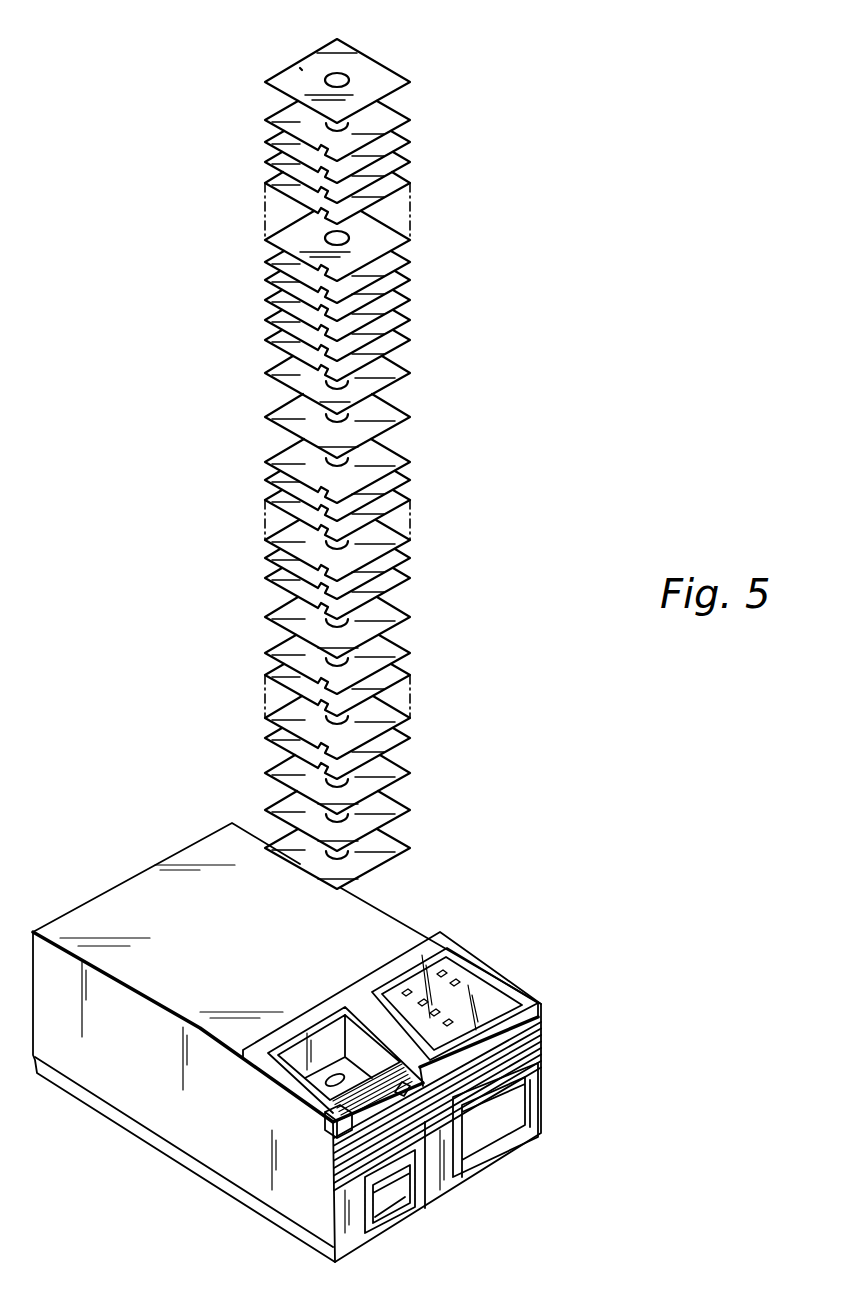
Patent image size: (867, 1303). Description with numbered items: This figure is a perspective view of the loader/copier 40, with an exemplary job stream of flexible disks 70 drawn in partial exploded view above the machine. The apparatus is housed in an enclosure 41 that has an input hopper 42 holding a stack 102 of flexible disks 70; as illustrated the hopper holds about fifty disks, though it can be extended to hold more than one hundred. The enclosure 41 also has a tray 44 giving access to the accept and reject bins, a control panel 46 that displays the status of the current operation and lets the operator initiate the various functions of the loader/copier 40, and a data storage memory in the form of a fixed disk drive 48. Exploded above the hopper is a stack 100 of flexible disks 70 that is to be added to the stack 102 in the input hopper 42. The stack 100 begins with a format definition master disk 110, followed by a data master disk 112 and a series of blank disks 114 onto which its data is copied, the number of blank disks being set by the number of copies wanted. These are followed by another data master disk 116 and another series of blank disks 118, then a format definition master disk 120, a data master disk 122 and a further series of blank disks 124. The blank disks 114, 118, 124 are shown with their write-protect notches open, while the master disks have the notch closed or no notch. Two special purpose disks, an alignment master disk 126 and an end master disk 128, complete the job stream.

The stack of flexible disks 100 is at (548, 405).
The flexible disk 70 is at (378, 66).
The end master disk 128 is at (300, 70).
The blank disks 124 is at (416, 108).
The data master disk 122 is at (400, 373).
The format definition master disk 120 is at (400, 417).
The blank disks 118 is at (419, 445).
The data master disk 116 is at (400, 617).
The blank disks 114 is at (416, 645).
The data master disk 112 is at (400, 772).
The format definition master disk 110 is at (400, 812).
The alignment master disk 126 is at (400, 852).
The loader/copier 40 is at (172, 1126).
The input hopper 42 is at (340, 1116).
The stack of flexible disks in the input hopper 102 is at (340, 1062).
The control panel 46 is at (468, 1003).
The enclosure 41 is at (538, 1087).
The fixed disk drive 48 is at (490, 1137).
The tray 44 is at (388, 1210).